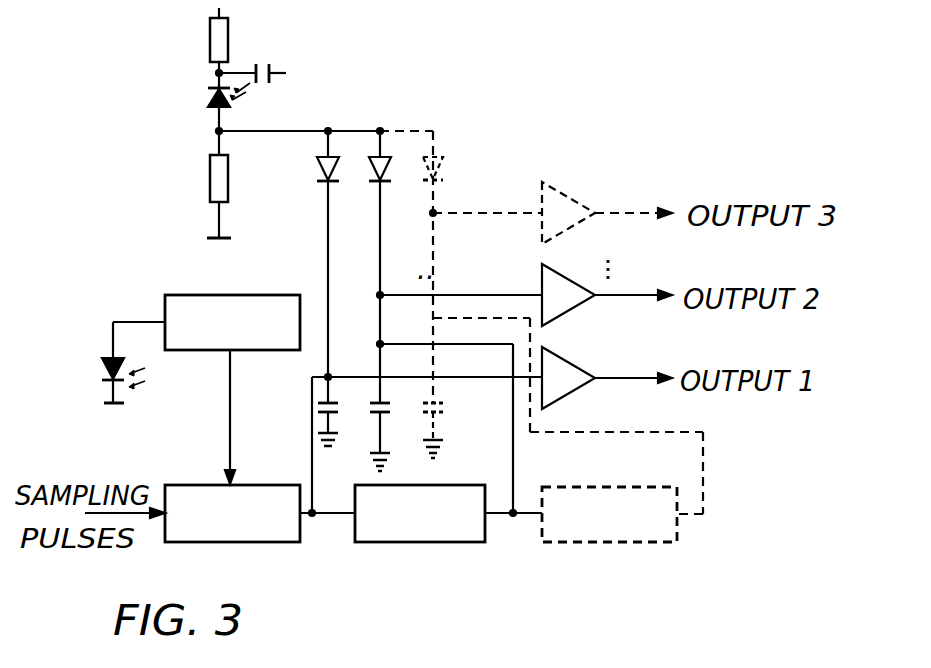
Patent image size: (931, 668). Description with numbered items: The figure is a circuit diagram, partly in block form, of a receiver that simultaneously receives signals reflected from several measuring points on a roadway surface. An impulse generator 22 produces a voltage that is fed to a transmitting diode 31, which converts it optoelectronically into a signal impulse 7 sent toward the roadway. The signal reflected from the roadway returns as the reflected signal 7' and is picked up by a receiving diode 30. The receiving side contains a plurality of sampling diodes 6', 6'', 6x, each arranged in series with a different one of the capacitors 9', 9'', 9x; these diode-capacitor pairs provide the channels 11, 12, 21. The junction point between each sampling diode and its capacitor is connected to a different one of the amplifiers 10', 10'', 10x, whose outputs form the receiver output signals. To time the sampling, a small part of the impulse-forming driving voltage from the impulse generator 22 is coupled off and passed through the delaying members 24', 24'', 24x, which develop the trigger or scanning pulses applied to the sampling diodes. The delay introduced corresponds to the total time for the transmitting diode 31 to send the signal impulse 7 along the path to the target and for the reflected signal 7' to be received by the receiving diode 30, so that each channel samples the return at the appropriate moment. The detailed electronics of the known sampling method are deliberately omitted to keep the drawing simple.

The receiving diode 30 is at (206, 97).
The reflected signal 7' is at (260, 107).
The sampling diode 6' is at (338, 194).
The sampling diode 6'' is at (393, 194).
The sampling diode 6x is at (440, 162).
The channel 11 is at (352, 279).
The channel 12 is at (402, 292).
The channel 21 is at (454, 267).
The amplifier 10x is at (565, 230).
The amplifier 10'' is at (607, 305).
The amplifier 10' is at (607, 387).
The impulse generator 22 is at (232, 322).
The transmitting diode 31 is at (106, 366).
The signal impulse 7 is at (145, 389).
The delaying member 24' is at (232, 513).
The delaying member 24'' is at (420, 513).
The delaying member 24x is at (609, 514).
The capacitor 9' is at (343, 412).
The capacitor 9'' is at (396, 436).
The capacitor 9x is at (444, 402).